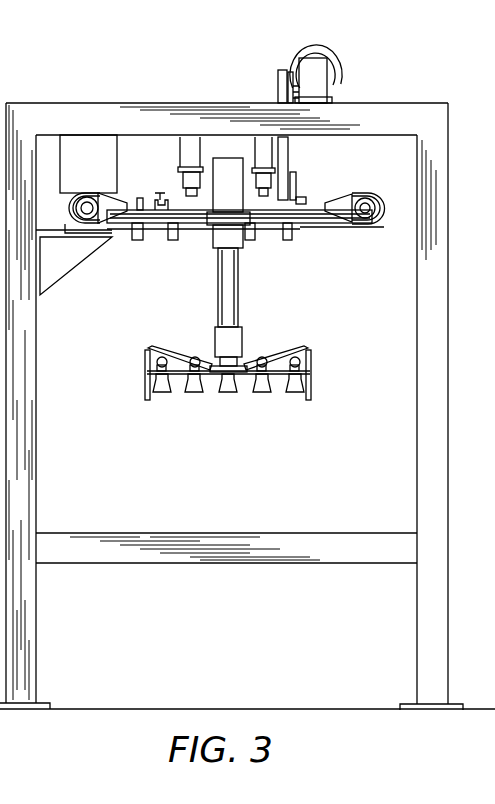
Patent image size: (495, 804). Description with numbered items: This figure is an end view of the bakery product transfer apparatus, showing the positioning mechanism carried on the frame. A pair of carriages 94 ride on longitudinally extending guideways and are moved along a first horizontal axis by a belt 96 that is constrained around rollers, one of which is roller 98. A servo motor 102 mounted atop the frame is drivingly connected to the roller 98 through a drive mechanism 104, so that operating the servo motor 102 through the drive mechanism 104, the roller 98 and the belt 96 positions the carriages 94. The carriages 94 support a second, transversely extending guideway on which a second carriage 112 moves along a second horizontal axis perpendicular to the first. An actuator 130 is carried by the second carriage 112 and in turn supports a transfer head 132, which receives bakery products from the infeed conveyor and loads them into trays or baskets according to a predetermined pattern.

The carriages 94 is at (163, 207).
The belt 96 is at (228, 158).
The roller 98 is at (213, 167).
The servo motor 102 is at (338, 72).
The drive mechanism 104 is at (320, 91).
The second carriage 112 is at (207, 232).
The actuator 130 is at (247, 296).
The transfer head 132 is at (316, 348).